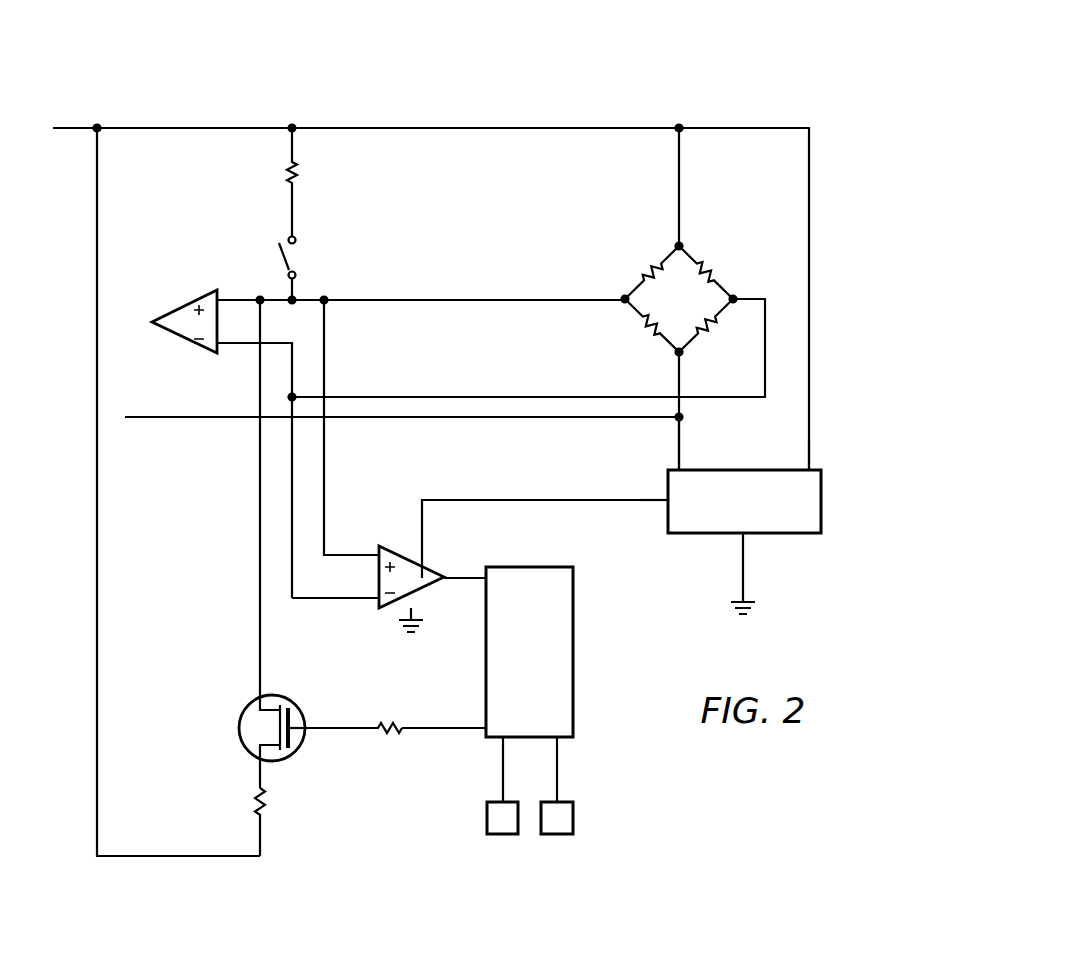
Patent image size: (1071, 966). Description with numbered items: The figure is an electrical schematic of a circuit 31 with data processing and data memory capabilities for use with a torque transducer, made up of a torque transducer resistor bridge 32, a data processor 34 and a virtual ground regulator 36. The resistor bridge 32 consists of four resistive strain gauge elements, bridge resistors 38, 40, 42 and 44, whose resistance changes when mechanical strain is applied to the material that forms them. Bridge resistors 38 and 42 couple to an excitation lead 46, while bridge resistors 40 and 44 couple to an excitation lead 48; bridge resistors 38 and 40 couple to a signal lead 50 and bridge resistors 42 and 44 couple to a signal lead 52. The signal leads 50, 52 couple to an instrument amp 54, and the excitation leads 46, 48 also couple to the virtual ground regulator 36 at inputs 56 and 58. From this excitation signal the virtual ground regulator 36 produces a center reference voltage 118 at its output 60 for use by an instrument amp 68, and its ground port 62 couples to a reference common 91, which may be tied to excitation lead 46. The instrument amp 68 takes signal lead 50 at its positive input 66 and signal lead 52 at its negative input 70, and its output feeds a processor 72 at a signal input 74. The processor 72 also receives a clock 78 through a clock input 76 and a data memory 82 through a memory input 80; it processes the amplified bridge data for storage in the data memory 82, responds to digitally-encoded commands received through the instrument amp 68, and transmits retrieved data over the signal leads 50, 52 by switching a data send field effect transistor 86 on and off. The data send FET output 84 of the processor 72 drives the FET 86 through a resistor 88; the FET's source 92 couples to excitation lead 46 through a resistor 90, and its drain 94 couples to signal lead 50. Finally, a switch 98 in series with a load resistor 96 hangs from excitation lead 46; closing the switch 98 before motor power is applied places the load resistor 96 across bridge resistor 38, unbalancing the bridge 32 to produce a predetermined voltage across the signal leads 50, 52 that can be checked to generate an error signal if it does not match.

The circuit 31 is at (624, 95).
The torque transducer resistor bridge 32 is at (646, 299).
The data processor 34 is at (528, 831).
The virtual ground regulator 36 is at (746, 519).
The bridge resistor 38 is at (652, 268).
The bridge resistor 40 is at (647, 330).
The bridge resistor 42 is at (708, 268).
The bridge resistor 44 is at (705, 337).
The excitation lead 46 is at (183, 127).
The excitation lead 48 is at (178, 416).
The signal lead 50 is at (485, 298).
The signal lead 52 is at (485, 395).
The instrument amp 54 is at (186, 302).
The input 56 is at (677, 466).
The input 58 is at (812, 466).
The output 60 is at (652, 503).
The ground port 62 is at (742, 552).
The positive input 66 is at (338, 554).
The instrument amp 68 is at (398, 540).
The negative input 70 is at (308, 600).
The processor 72 is at (517, 664).
The signal input 74 is at (478, 580).
The clock input 76 is at (560, 741).
The clock 78 is at (574, 818).
The memory input 80 is at (500, 741).
The data memory 82 is at (486, 818).
The data send FET output 84 is at (482, 726).
The data send field effect transistor 86 is at (261, 552).
The resistor 88 is at (386, 740).
The resistor 90 is at (256, 811).
The reference common 91 is at (742, 616).
The source 92 is at (256, 759).
The drain 94 is at (258, 700).
The load resistor 96 is at (300, 170).
The switch 98 is at (302, 252).
The center reference voltage 118 is at (447, 500).